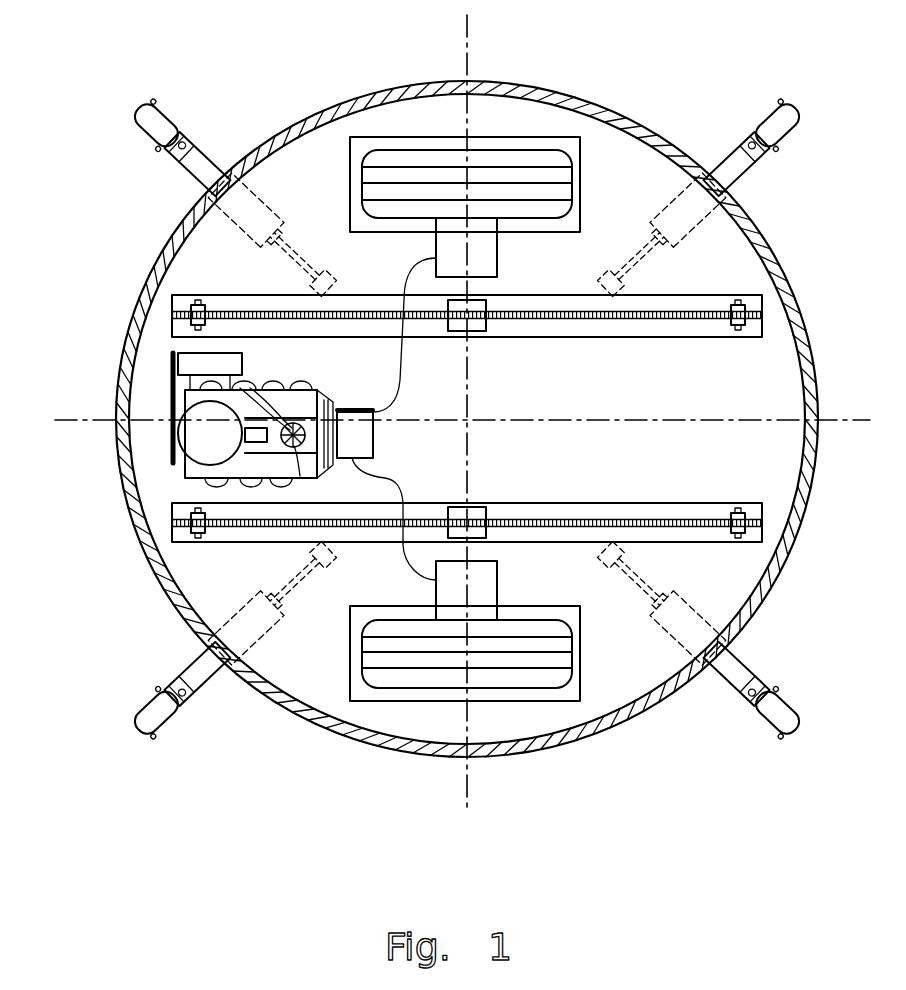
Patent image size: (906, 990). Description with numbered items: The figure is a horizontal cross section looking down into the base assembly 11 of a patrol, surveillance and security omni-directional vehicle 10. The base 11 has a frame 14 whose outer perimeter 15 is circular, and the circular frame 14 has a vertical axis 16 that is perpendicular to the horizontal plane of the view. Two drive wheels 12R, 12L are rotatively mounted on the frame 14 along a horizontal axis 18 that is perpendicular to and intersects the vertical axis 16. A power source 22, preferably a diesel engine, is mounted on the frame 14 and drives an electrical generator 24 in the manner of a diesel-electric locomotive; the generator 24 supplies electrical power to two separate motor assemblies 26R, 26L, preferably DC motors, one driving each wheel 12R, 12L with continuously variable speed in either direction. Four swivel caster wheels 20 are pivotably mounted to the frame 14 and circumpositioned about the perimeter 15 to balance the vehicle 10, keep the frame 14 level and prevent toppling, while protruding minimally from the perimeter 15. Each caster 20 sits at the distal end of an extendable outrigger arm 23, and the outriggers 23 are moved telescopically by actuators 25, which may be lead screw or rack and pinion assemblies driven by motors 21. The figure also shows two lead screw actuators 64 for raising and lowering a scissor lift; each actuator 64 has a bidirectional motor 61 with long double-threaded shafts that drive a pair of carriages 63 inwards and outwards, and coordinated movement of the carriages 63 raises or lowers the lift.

The omni-directional vehicle 10 is at (128, 822).
The base assembly 11 is at (640, 100).
The left drive wheel 12L is at (578, 140).
The right drive wheel 12R is at (567, 683).
The frame 14 is at (578, 747).
The outer perimeter 15 is at (505, 755).
The vertical axis 16 is at (472, 416).
The horizontal axis 18 is at (467, 798).
The swivel caster wheel 20 is at (172, 122).
The motor 21 is at (335, 285).
The power source 22 is at (280, 410).
The extendable outrigger arm 23 is at (208, 155).
The electrical generator 24 is at (348, 410).
The actuator 25 is at (326, 268).
The left drive motor 26L is at (498, 258).
The right drive motor 26R is at (498, 580).
The bidirectional motor 61 is at (458, 332).
The carriage 63 is at (190, 318).
The lead screw actuator 64 is at (575, 322).